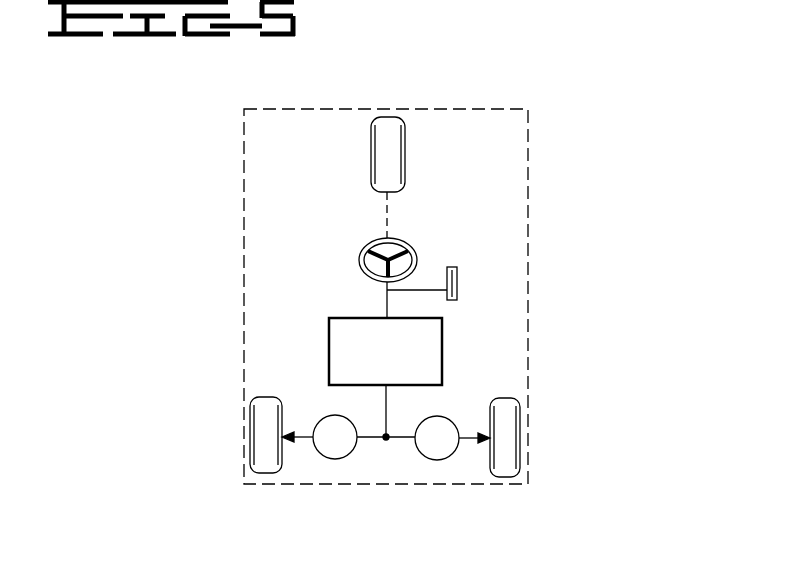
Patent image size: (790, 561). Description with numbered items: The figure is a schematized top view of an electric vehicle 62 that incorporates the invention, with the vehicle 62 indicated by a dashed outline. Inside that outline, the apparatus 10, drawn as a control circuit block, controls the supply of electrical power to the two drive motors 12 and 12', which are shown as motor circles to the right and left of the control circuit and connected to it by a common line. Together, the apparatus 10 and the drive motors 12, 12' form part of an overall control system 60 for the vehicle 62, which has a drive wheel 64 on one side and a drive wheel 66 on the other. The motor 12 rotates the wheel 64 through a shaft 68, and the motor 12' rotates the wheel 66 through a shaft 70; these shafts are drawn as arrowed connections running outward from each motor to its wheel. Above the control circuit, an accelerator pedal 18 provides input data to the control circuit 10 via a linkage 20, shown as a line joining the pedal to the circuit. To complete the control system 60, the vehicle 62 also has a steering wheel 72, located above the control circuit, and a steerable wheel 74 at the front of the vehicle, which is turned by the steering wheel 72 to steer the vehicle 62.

The apparatus 10 is at (442, 352).
The drive motor 12 is at (445, 416).
The drive motor 12' is at (320, 413).
The accelerator pedal 18 is at (458, 279).
The linkage 20 is at (418, 290).
The control system 60 is at (576, 169).
The electric vehicle 62 is at (540, 262).
The drive wheel 64 is at (521, 418).
The drive wheel 66 is at (250, 452).
The shaft 68 is at (472, 440).
The shaft 70 is at (307, 440).
The steering wheel 72 is at (359, 259).
The steerable wheel 74 is at (371, 145).